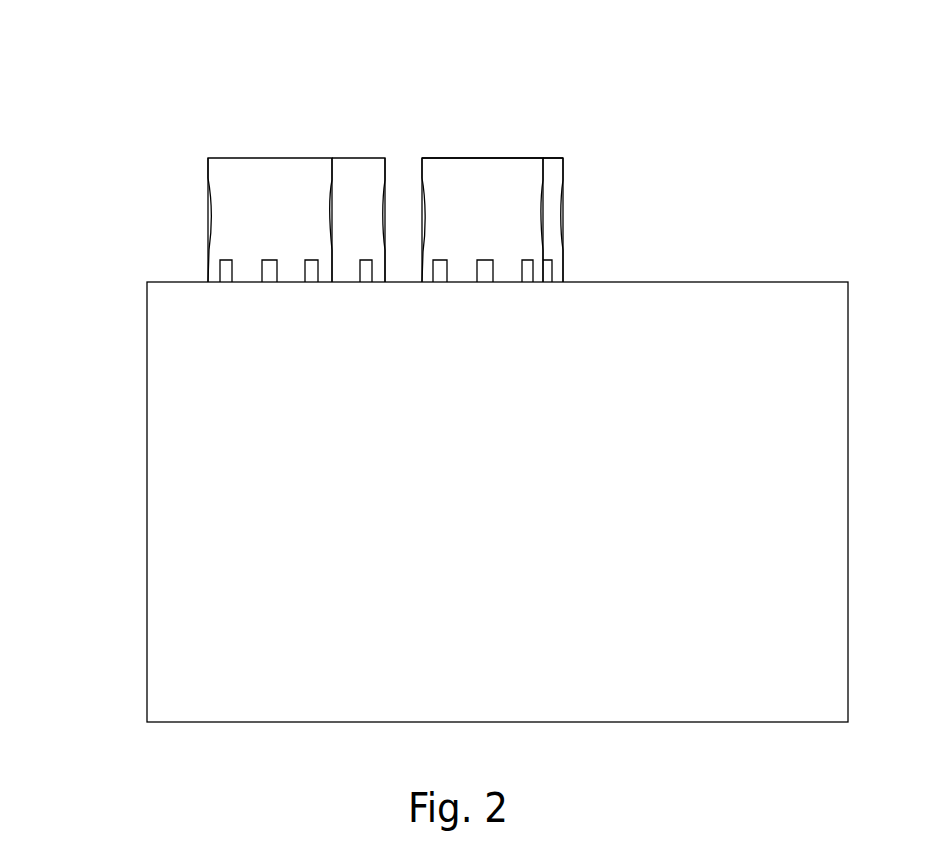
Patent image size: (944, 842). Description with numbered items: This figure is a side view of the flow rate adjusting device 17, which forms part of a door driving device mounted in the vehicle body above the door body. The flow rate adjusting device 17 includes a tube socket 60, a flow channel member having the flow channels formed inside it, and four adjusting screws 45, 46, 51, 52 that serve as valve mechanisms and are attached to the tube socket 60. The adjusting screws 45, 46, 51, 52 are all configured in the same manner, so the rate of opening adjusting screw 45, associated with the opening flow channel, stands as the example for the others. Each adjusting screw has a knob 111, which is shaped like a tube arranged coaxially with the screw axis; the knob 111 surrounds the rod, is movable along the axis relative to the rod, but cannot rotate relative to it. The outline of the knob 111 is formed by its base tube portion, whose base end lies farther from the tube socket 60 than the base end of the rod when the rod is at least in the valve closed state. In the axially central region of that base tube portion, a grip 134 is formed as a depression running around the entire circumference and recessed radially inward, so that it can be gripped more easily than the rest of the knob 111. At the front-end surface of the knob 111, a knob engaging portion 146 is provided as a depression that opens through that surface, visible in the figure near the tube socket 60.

The flow rate adjusting device 17 is at (198, 63).
The adjusting screw 51 is at (284, 157).
The adjusting screw 52 is at (360, 157).
The rate of opening adjusting screw 45 is at (470, 157).
The adjusting screw 46 is at (568, 155).
The knob 111 is at (516, 158).
The grip 134 is at (543, 209).
The tube socket 60 is at (747, 296).
The knob engaging portion 146 is at (523, 276).